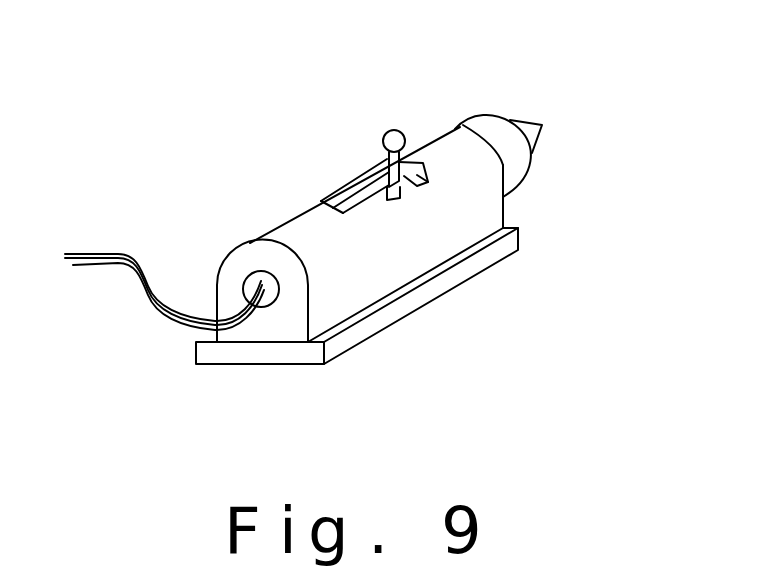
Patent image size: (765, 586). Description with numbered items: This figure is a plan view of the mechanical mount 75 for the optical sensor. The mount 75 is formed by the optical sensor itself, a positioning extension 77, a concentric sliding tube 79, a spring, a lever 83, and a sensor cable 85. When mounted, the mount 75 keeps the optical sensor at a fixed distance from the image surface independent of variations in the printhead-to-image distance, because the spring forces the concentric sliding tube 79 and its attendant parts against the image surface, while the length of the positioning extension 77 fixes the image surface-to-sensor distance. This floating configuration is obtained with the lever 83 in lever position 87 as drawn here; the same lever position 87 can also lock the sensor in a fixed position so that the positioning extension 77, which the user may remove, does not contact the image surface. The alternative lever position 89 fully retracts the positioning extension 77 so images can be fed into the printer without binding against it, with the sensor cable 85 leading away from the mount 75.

The mechanical mount 75 is at (332, 360).
The positioning extension 77 is at (537, 140).
The concentric sliding tube 79 is at (467, 122).
The lever 83 is at (383, 137).
The sensor cable 85 is at (103, 252).
The lever position 87 is at (427, 183).
The lever position 89 is at (400, 200).